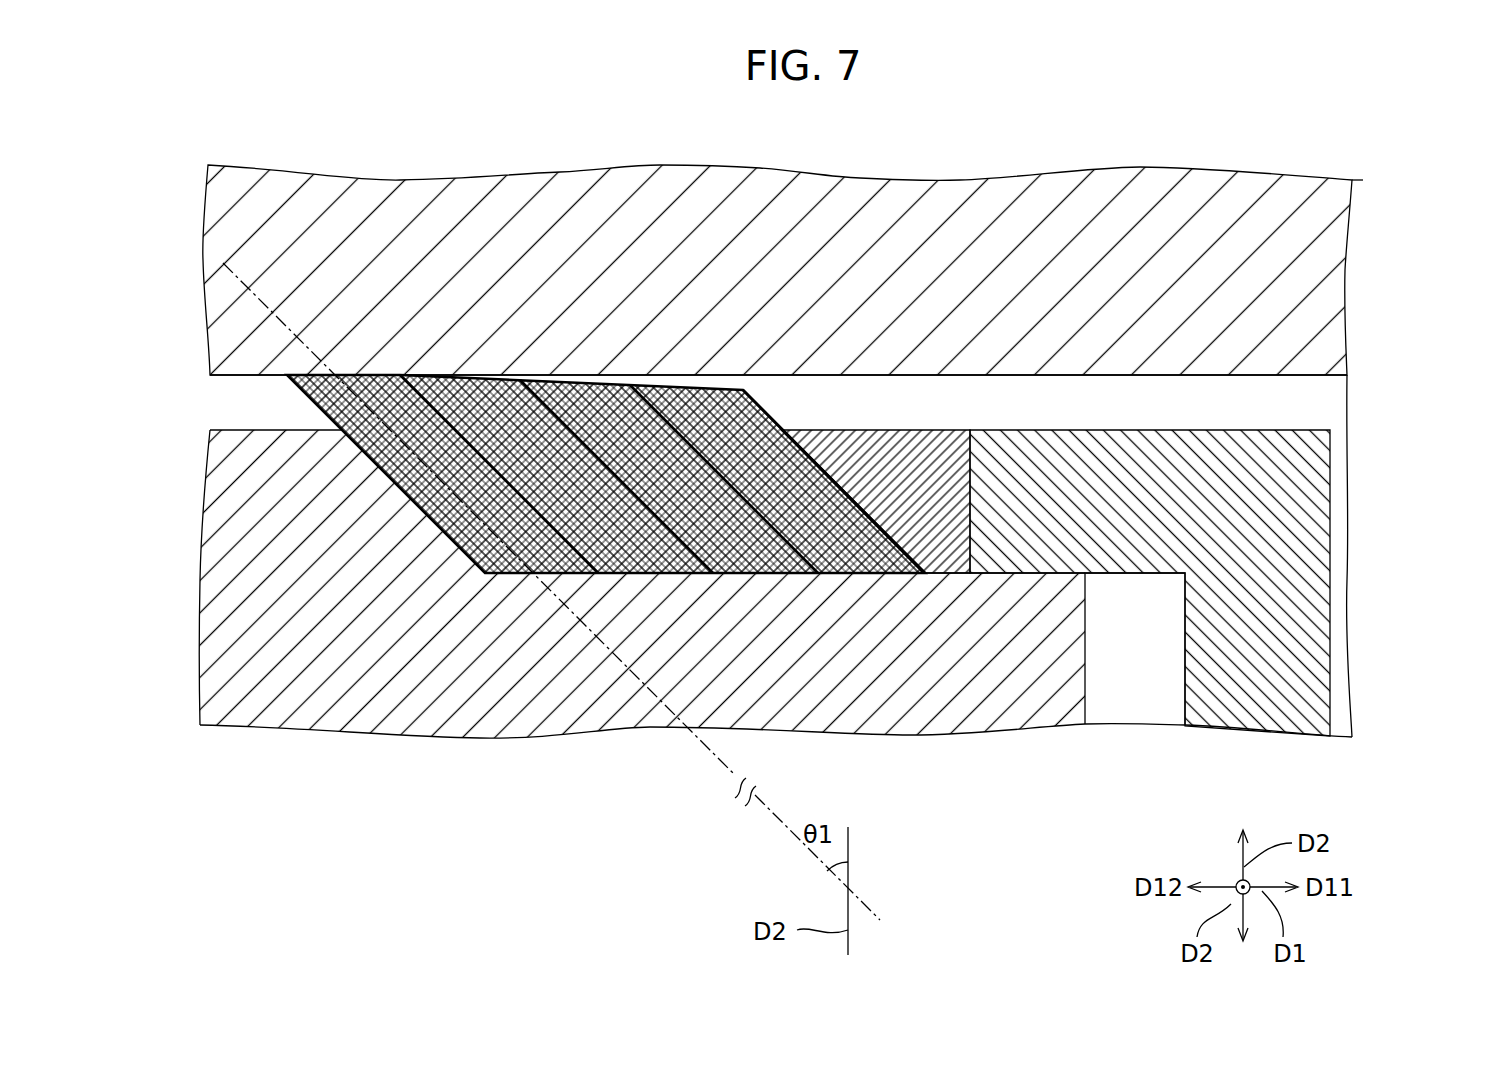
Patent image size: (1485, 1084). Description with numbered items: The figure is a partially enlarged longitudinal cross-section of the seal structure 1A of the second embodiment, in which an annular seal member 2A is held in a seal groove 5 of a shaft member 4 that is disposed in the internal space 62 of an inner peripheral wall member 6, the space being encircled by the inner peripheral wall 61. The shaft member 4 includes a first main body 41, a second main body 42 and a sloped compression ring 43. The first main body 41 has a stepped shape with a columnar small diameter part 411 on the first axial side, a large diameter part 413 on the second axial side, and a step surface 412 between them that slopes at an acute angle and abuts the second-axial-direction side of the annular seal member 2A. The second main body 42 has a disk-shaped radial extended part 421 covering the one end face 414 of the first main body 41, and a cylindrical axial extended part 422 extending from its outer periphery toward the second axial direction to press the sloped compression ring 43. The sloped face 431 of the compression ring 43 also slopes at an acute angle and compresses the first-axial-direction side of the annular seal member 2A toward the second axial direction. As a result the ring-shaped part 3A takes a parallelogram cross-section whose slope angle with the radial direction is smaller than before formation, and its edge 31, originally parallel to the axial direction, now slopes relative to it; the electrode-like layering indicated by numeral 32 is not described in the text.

The seal structure 1A is at (226, 116).
The annular seal member 2A is at (786, 394).
The ring-shaped part 3A is at (515, 575).
The edge 31 is at (375, 392).
The electrode layer 32 is at (288, 377).
The shaft member 4 is at (785, 481).
The first main body 41 is at (422, 720).
The step surface 412 is at (392, 483).
The large diameter part 413 is at (240, 430).
The one end face 414 is at (1087, 686).
The second main body 42 is at (1338, 690).
The radial extended part 421 is at (1310, 613).
The axial extended part 422 is at (1290, 433).
The sloped compression ring 43 is at (860, 503).
The sloped face 431 is at (837, 573).
The small diameter part 411 is at (959, 415).
The seal groove 5 is at (548, 459).
The inner peripheral wall member 6 is at (1243, 196).
The inner peripheral wall 61 is at (211, 380).
The internal space 62 is at (1320, 381).